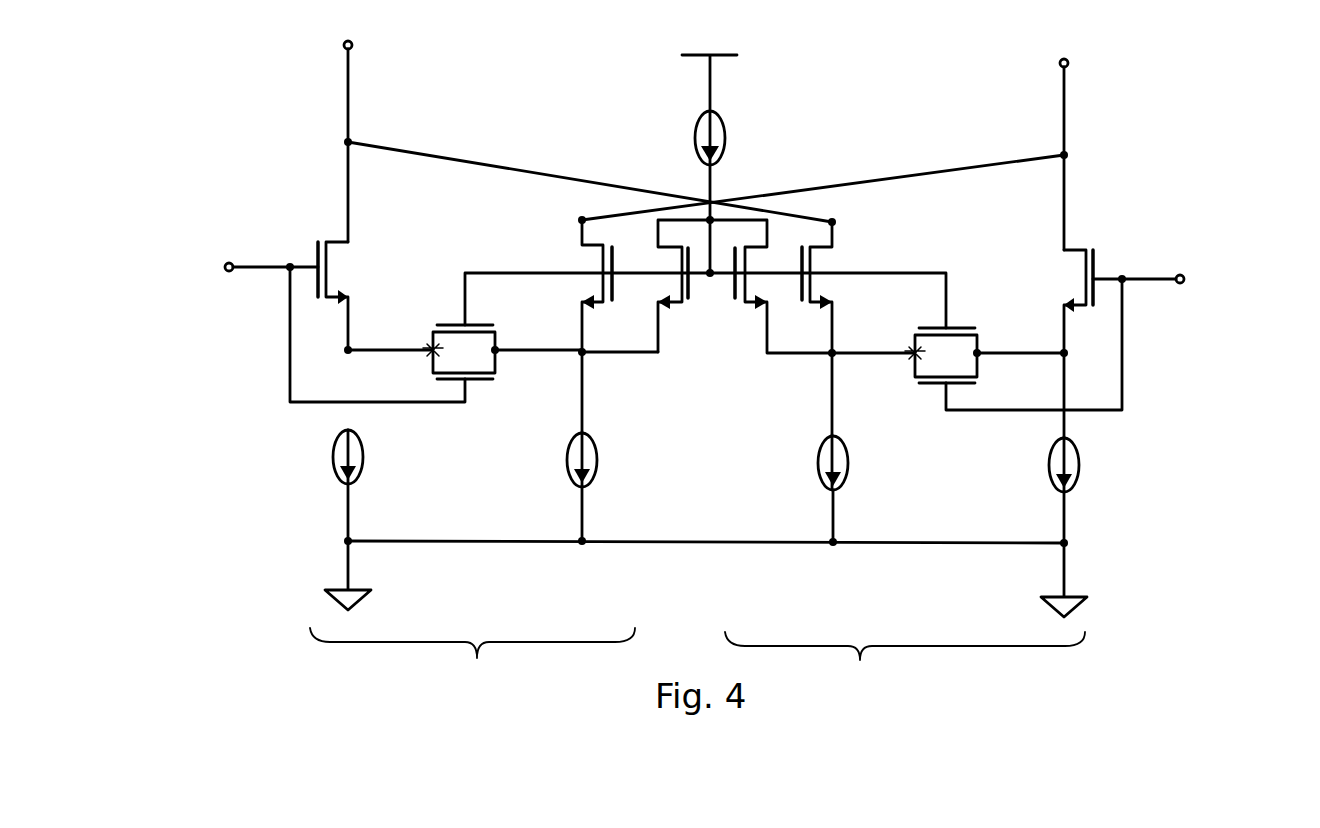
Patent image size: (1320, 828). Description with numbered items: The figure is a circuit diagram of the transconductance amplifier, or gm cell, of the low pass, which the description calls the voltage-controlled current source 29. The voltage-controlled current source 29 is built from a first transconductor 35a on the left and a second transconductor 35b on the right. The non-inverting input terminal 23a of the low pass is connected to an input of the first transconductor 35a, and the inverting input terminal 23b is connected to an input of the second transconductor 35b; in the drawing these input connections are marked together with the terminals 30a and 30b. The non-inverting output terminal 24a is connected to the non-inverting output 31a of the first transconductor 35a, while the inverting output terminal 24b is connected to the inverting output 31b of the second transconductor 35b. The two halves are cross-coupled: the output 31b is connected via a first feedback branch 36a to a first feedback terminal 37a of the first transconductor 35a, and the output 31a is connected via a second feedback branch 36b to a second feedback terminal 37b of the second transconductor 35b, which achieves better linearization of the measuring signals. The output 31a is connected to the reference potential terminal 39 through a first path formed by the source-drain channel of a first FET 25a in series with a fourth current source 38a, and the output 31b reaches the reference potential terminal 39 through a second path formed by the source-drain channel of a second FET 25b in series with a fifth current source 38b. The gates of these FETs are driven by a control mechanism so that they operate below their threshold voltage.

The voltage-controlled current source 29 is at (1166, 671).
The non-inverting input terminal 23a is at (239, 258).
The inverting input terminal 23b is at (1168, 289).
The non-inverting output terminal 24a is at (379, 125).
The inverting output terminal 24b is at (1044, 94).
The first FET 25a is at (362, 258).
The second FET 25b is at (1052, 278).
The first input node 30a is at (199, 258).
The second input node 30b is at (1205, 289).
The non-inverting output 31a is at (333, 75).
The inverting output 31b is at (1094, 142).
The first transconductor 35a is at (472, 669).
The second transconductor 35b is at (905, 671).
The first feedback branch 36a is at (883, 178).
The second feedback branch 36b is at (508, 165).
The first feedback terminal 37a is at (580, 220).
The second feedback terminal 37b is at (838, 223).
The fourth current source 38a is at (364, 456).
The fifth current source 38b is at (1048, 465).
The reference potential terminal 39 is at (352, 570).